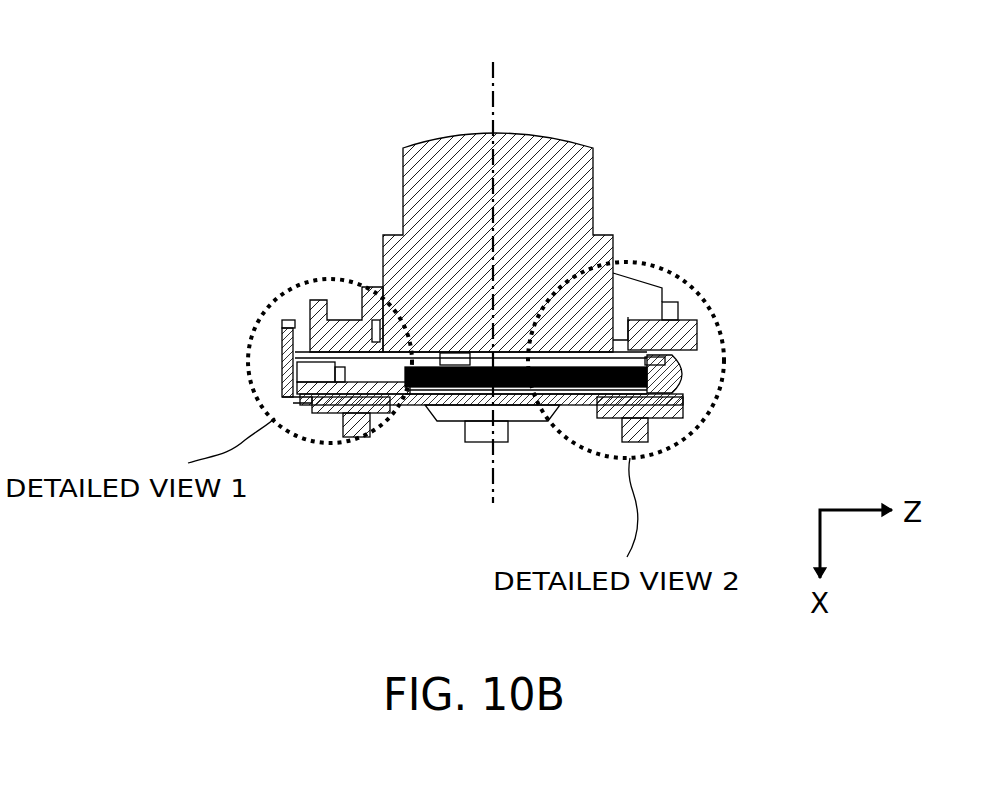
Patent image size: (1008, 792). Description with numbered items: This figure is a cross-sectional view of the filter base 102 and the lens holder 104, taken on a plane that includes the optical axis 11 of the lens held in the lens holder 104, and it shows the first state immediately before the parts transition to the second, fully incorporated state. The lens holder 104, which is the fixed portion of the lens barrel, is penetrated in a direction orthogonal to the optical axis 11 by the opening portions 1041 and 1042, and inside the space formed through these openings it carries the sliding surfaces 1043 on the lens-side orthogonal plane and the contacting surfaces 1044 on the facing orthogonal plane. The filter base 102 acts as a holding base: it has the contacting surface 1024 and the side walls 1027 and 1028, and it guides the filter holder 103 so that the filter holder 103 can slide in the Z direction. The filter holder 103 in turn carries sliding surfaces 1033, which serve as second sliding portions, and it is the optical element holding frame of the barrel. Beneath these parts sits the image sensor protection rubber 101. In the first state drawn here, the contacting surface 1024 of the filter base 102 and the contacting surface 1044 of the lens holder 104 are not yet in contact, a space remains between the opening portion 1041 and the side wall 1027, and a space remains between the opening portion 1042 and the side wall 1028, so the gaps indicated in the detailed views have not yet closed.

The lens holder 104 is at (560, 195).
The optical axis 11 is at (495, 223).
The opening portion 1041 is at (312, 352).
The sliding surface 1043 is at (568, 352).
The sliding surface 1033 is at (595, 363).
The filter holder 103 is at (537, 417).
The image sensor protection rubber 101 is at (645, 423).
The contacting surface 1024 is at (280, 400).
The side wall 1027 is at (280, 332).
The filter base 102 is at (293, 403).
The contacting surface 1044 is at (360, 428).
The opening portion 1042 is at (680, 394).
The side wall 1028 is at (683, 369).